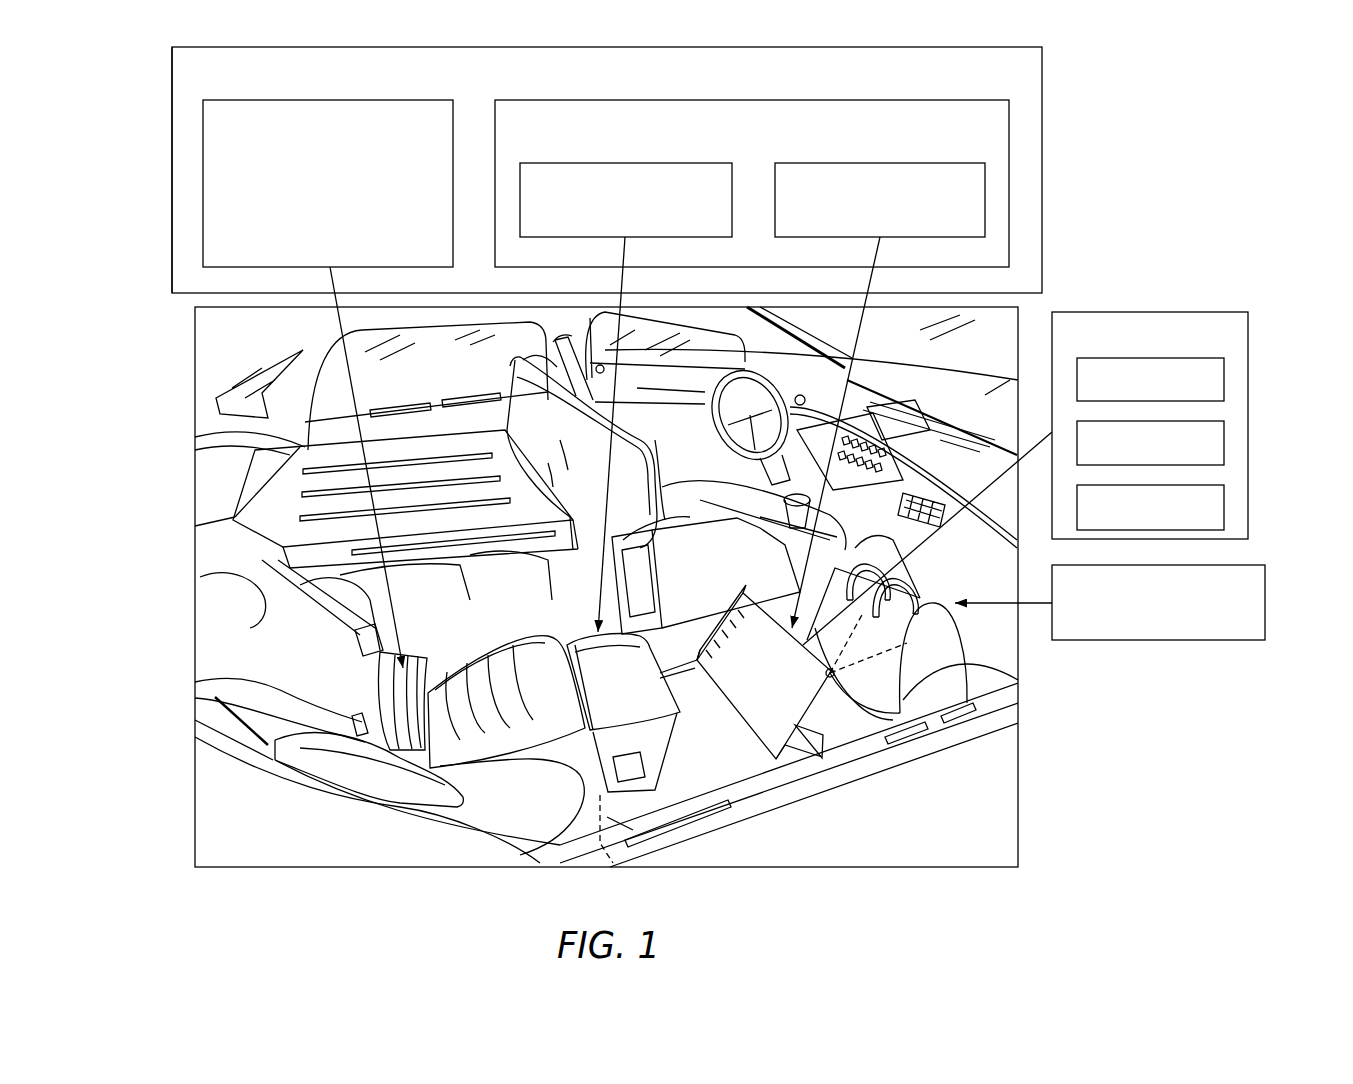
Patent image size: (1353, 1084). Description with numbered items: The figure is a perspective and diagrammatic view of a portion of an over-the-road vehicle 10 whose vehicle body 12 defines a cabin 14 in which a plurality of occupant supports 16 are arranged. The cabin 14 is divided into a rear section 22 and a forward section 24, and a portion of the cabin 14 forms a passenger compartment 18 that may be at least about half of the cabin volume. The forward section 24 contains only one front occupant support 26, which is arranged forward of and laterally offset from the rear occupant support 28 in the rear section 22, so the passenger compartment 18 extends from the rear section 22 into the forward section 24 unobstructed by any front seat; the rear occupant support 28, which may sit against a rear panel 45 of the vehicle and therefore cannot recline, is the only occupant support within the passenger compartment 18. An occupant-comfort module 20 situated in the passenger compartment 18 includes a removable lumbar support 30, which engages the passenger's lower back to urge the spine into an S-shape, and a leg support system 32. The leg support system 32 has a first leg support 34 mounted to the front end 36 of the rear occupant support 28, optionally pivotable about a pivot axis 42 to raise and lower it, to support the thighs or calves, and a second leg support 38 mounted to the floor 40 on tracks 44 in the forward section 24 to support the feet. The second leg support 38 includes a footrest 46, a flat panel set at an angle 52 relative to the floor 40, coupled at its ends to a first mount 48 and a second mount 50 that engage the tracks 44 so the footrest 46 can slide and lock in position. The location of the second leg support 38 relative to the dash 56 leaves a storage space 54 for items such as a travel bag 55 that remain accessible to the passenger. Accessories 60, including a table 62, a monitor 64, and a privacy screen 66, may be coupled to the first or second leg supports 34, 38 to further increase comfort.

The vehicle 10 is at (1076, 78).
The vehicle body 12 is at (232, 318).
The cabin 14 is at (195, 380).
The occupant supports 16 is at (162, 604).
The passenger compartment 18 is at (1158, 640).
The occupant-comfort module 20 is at (172, 150).
The rear section 22 is at (300, 390).
The forward section 24 is at (957, 382).
The front occupant support 26 is at (527, 351).
The rear occupant support 28 is at (195, 557).
The removable lumbar support 30 is at (203, 185).
The leg support system 32 is at (1009, 152).
The first leg support 34 is at (520, 198).
The front end 36 is at (588, 735).
The second leg support 38 is at (985, 200).
The floor 40 is at (873, 727).
The pivot axis 42 is at (584, 742).
The tracks 44 is at (660, 680).
The rear panel 45 is at (212, 751).
The footrest 46 is at (756, 690).
The first mount 48 is at (829, 737).
The second mount 50 is at (702, 640).
The angle 52 is at (950, 684).
The storage space 54 is at (993, 665).
The travel bag 55 is at (1012, 703).
The dash 56 is at (1014, 633).
The accessories 60 is at (1150, 312).
The table 62 is at (1224, 382).
The monitor 64 is at (1224, 445).
The privacy screen 66 is at (1224, 509).